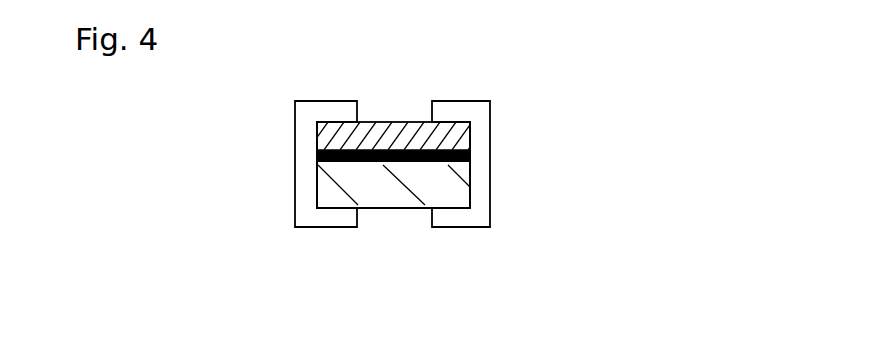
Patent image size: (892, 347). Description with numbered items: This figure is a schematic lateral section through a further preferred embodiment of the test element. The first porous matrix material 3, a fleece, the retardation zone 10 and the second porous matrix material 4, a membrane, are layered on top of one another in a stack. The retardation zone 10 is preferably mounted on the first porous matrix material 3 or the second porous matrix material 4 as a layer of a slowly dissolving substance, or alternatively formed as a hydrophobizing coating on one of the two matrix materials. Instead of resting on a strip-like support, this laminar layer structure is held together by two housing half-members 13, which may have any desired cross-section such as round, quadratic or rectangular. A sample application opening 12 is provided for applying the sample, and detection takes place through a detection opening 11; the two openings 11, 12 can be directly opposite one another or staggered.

The first porous matrix material 3 is at (370, 135).
The second porous matrix material 4 is at (445, 182).
The retardation zone 10 is at (470, 157).
The detection opening 11 is at (410, 217).
The sample application opening 12 is at (410, 103).
The housing half 13 is at (310, 215).